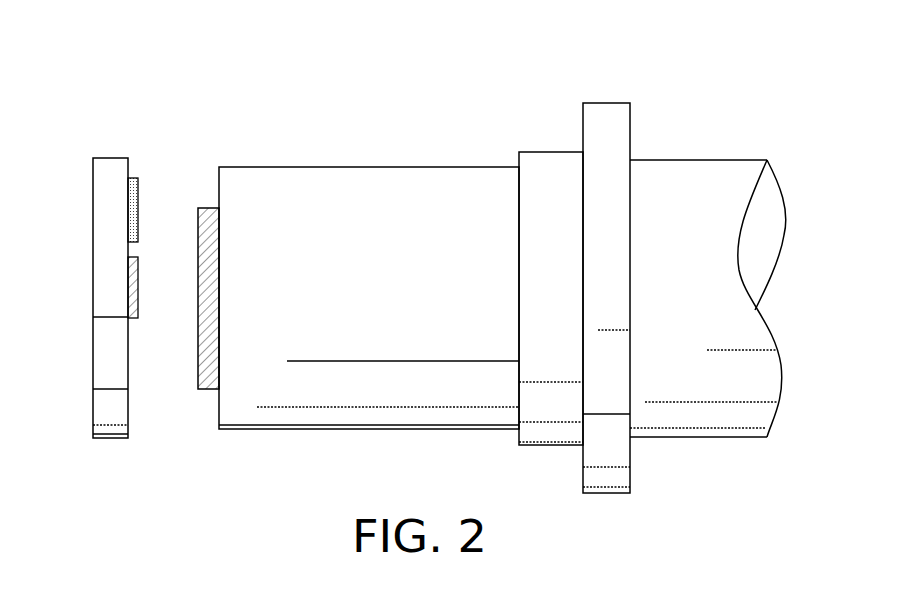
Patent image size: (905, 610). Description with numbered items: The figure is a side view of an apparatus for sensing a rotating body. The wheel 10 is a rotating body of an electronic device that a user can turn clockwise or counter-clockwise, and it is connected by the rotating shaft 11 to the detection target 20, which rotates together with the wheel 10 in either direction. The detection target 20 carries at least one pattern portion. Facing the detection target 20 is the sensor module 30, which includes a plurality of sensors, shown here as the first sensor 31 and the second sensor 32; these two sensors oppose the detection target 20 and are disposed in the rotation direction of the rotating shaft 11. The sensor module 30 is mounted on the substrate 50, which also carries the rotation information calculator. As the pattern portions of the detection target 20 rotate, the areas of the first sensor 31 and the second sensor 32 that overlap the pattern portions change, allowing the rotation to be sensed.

The wheel 10 is at (685, 170).
The rotating shaft 11 is at (383, 182).
The detection target 20 is at (205, 190).
The sensor module 30 is at (137, 177).
The first sensor 31 is at (137, 177).
The second sensor 32 is at (138, 295).
The substrate 50 is at (103, 407).